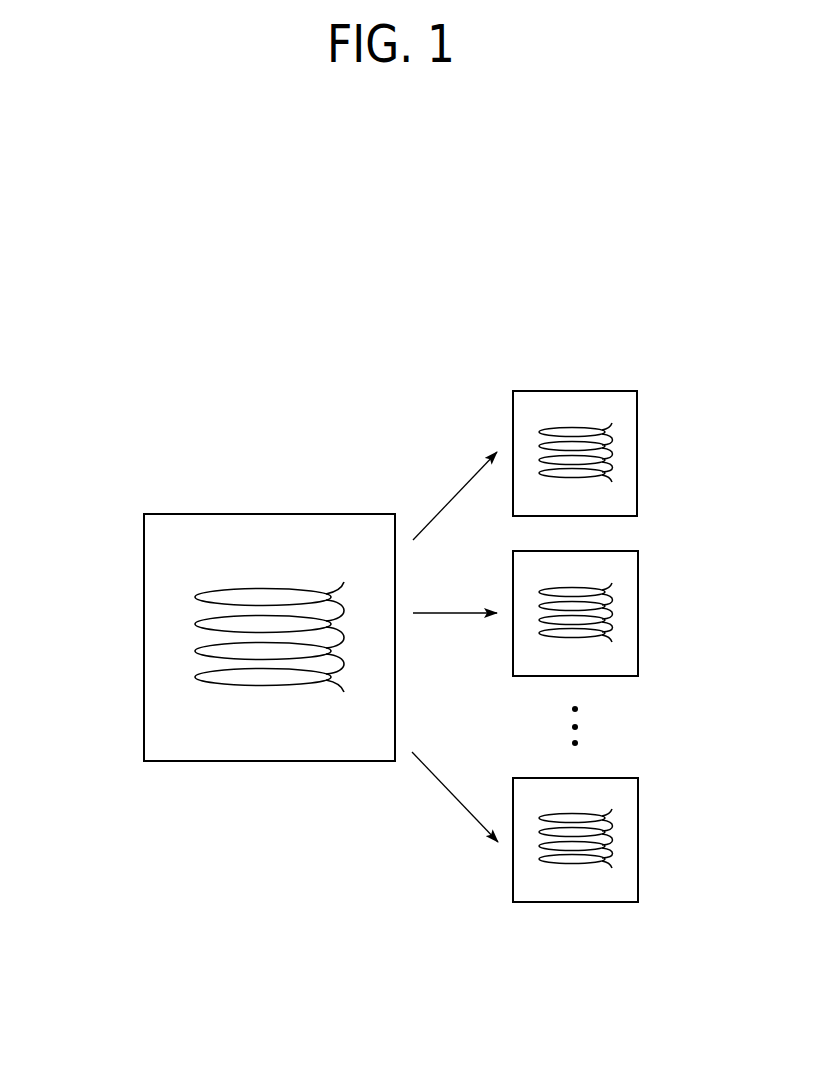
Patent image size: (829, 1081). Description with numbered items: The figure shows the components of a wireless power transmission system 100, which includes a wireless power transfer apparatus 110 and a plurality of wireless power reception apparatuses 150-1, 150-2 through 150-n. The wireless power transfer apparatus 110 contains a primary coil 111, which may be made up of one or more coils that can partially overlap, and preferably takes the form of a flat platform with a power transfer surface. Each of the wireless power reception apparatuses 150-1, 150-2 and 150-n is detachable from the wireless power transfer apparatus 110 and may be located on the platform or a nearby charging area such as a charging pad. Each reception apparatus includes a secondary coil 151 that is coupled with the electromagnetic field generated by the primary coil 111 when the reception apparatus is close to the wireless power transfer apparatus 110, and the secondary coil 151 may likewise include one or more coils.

The wireless power transmission system 100 is at (152, 381).
The wireless power transfer apparatus 110 is at (268, 514).
The primary coil 111 is at (268, 688).
The wireless power reception apparatus 150-1 is at (637, 453).
The wireless power reception apparatus 150-2 is at (638, 611).
The wireless power reception apparatus 150-n is at (638, 838).
The secondary coil 151 is at (575, 430).